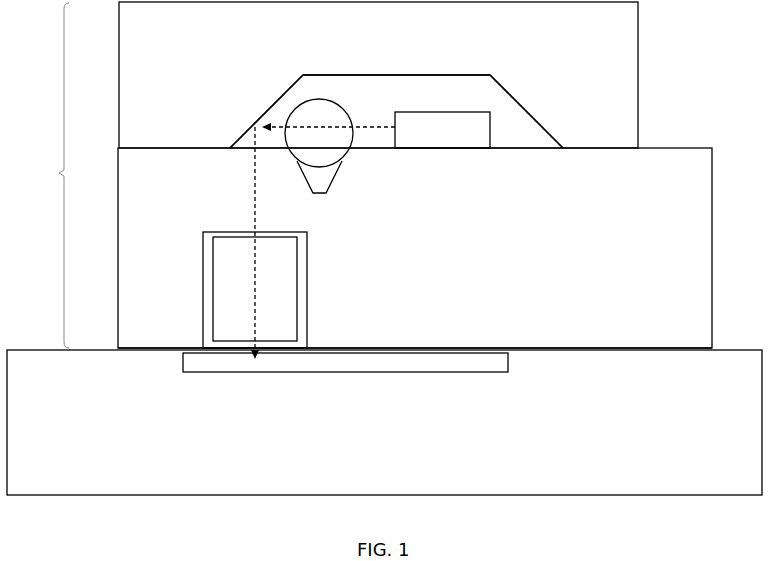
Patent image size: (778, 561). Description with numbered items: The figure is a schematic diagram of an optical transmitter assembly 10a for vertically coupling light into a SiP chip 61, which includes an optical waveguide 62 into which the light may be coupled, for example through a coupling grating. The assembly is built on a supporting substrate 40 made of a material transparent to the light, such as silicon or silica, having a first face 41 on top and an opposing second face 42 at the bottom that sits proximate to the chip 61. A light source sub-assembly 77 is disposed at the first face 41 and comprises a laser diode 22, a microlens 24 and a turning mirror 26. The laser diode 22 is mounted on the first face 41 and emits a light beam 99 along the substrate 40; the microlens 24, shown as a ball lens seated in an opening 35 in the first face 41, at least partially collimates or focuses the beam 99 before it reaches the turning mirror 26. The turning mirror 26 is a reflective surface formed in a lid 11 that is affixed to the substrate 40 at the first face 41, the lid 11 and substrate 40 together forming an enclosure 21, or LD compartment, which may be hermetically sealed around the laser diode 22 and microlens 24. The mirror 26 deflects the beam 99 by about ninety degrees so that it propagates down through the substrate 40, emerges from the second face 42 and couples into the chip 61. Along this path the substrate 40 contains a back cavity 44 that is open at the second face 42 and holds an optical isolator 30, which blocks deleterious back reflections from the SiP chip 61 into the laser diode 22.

The optical transmitter assembly 10a is at (43, 175).
The lid 11 is at (378, 75).
The supporting substrate 40 is at (415, 248).
The SiP chip 61 is at (384, 422).
The enclosure 21 is at (327, 75).
The light source sub-assembly 77 is at (410, 76).
The turning mirror 26 is at (264, 109).
The first face 41 is at (534, 151).
The second face 42 is at (590, 345).
The laser diode 22 is at (442, 130).
The microlens 24 is at (341, 167).
The opening 35 is at (305, 172).
The light beam 99 is at (368, 127).
The back cavity 44 is at (307, 262).
The optical isolator 30 is at (213, 262).
The optical waveguide 62 is at (316, 372).